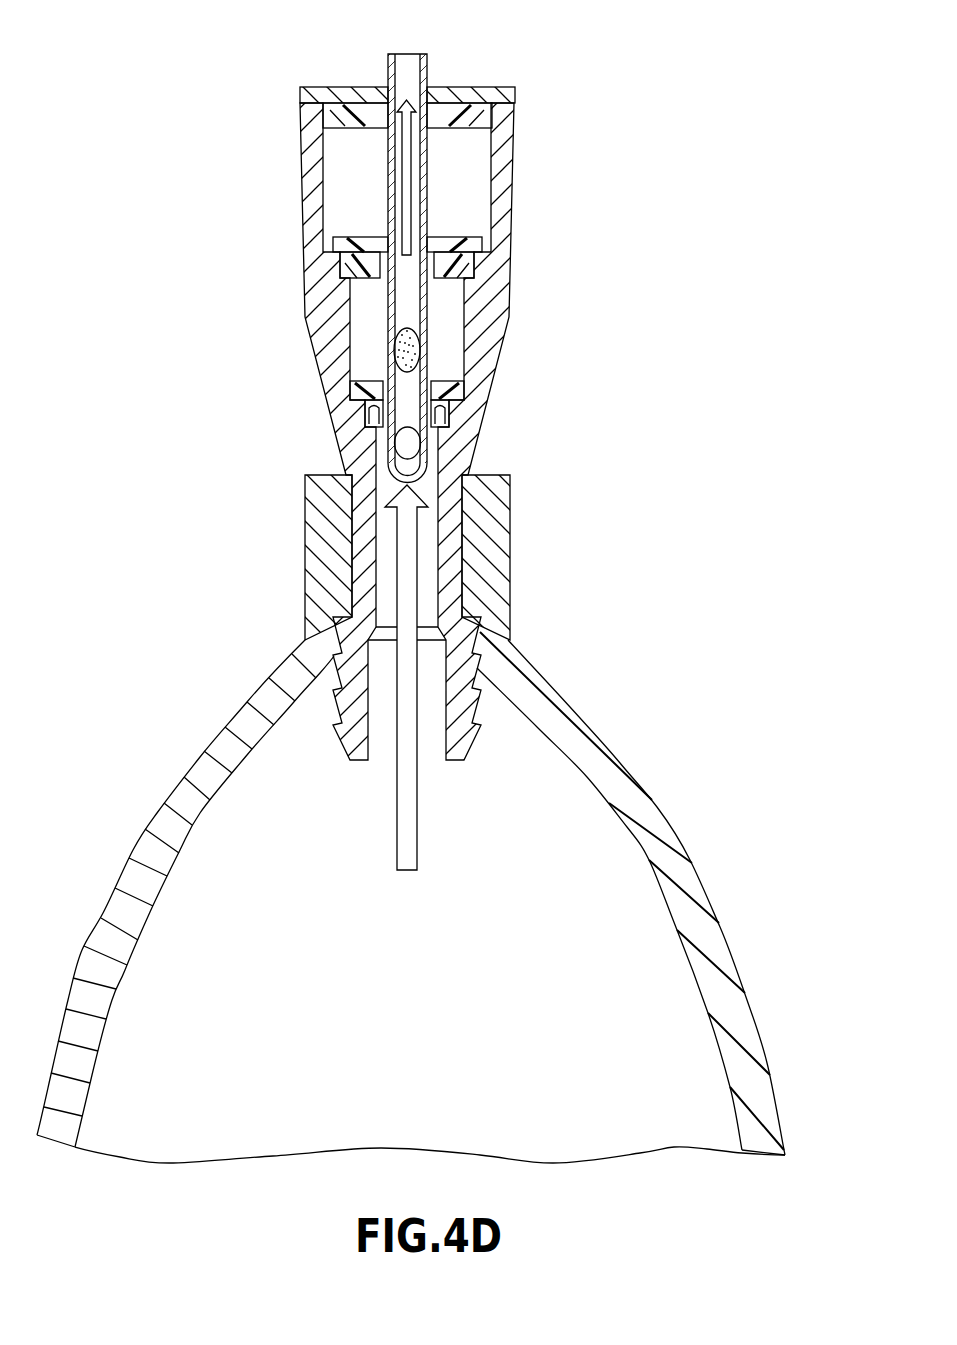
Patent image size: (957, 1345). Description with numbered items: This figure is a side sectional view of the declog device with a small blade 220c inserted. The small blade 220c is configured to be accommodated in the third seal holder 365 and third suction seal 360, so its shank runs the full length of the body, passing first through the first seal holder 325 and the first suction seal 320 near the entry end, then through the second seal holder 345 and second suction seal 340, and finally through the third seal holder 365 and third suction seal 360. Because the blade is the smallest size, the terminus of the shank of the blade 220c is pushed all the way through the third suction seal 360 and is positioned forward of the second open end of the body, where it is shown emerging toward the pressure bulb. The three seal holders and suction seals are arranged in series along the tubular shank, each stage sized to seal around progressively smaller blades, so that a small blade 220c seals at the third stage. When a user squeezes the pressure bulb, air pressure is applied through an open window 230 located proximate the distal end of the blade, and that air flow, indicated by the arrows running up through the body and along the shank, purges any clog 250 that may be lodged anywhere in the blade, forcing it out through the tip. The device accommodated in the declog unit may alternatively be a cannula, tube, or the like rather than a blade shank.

The small blade 220c is at (387, 64).
The first seal holder 325 is at (493, 92).
The first suction seal 320 is at (498, 113).
The second seal holder 345 is at (467, 242).
The second suction seal 340 is at (468, 263).
The clog 250 is at (393, 335).
The third seal holder 365 is at (462, 380).
The third suction seal 360 is at (447, 408).
The open window 230 is at (402, 452).